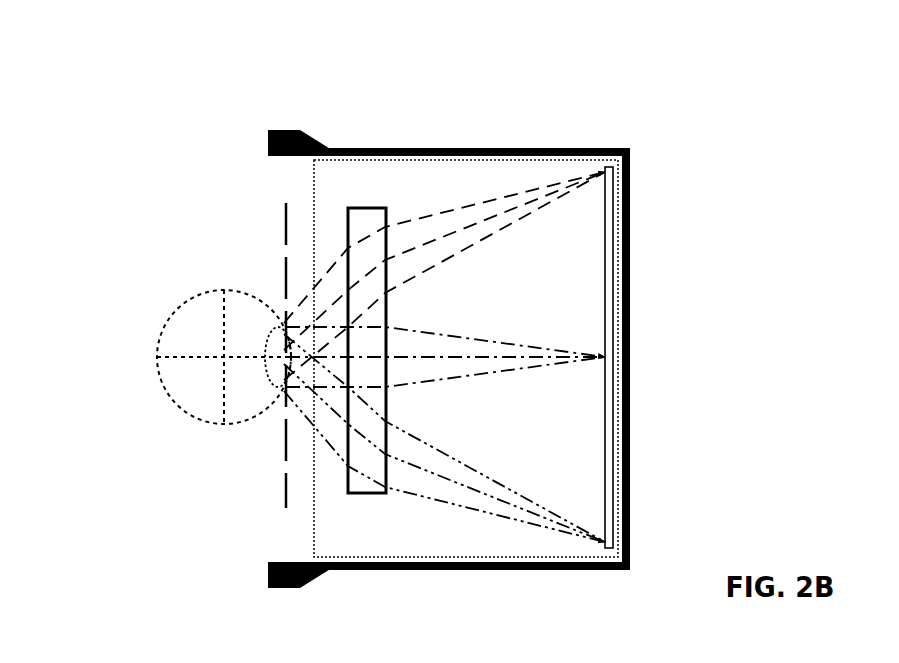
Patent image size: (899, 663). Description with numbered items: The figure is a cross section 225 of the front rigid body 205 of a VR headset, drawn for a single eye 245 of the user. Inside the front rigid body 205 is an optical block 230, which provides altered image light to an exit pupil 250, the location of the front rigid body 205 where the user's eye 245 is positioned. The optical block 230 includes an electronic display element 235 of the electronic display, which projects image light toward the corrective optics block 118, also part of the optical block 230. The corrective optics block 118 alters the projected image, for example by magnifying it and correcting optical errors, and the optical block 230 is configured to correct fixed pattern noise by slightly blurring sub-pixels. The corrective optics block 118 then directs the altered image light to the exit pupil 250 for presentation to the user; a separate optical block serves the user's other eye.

The cross section 225 is at (53, 33).
The corrective optics block 118 is at (345, 222).
The optical block 230 is at (312, 240).
The electronic display element 235 is at (603, 232).
The front rigid body 205 is at (630, 146).
The eye 245 is at (190, 298).
The exit pupil 250 is at (279, 491).